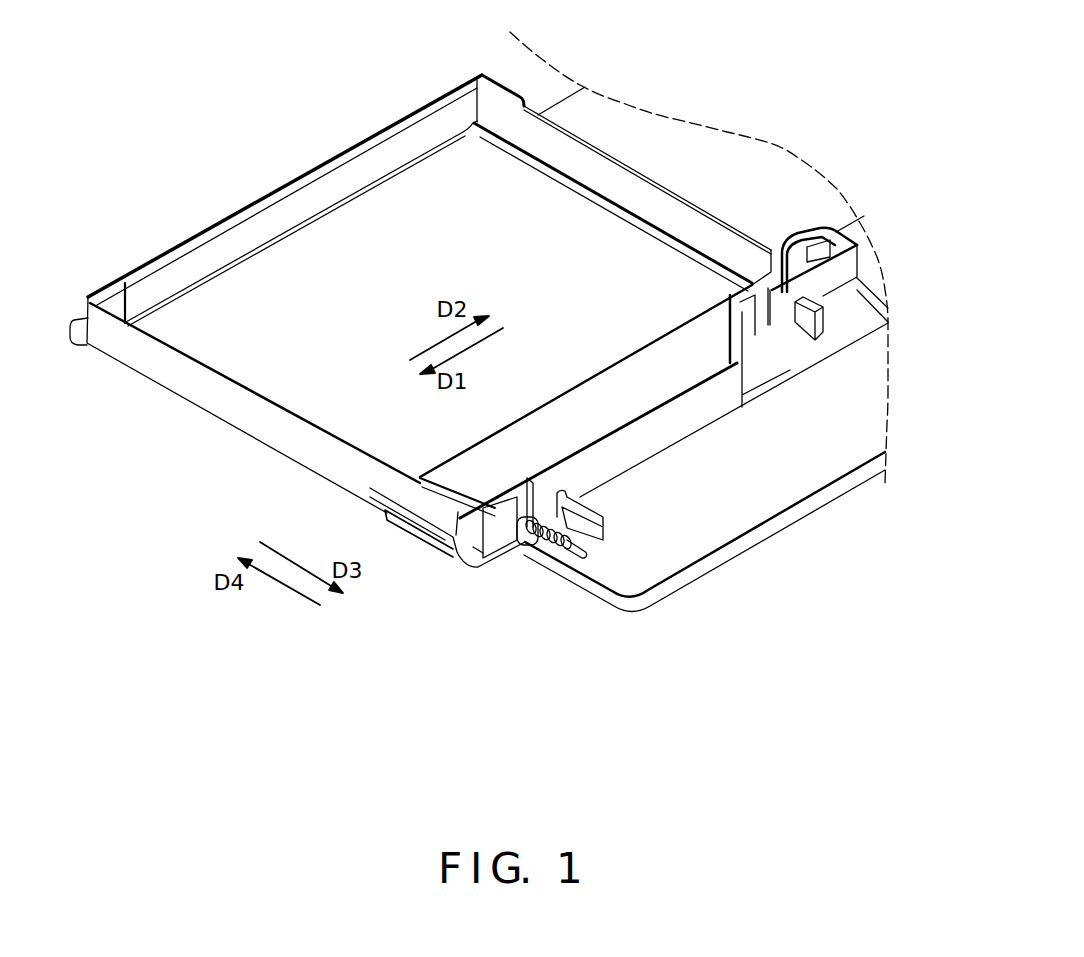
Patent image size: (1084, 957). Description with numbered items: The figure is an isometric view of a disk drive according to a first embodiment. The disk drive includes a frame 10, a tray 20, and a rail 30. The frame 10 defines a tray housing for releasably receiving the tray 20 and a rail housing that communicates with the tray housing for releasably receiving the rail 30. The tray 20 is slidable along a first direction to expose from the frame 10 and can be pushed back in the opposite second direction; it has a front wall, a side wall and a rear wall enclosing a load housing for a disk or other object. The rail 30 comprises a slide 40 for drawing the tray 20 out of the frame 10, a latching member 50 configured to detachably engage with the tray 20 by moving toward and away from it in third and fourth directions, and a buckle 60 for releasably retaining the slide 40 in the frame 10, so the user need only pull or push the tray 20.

The frame 10 is at (843, 487).
The tray 20 is at (225, 403).
The rail 30 is at (631, 487).
The slide 40 is at (473, 554).
The latching member 50 is at (535, 550).
The buckle 60 is at (813, 342).